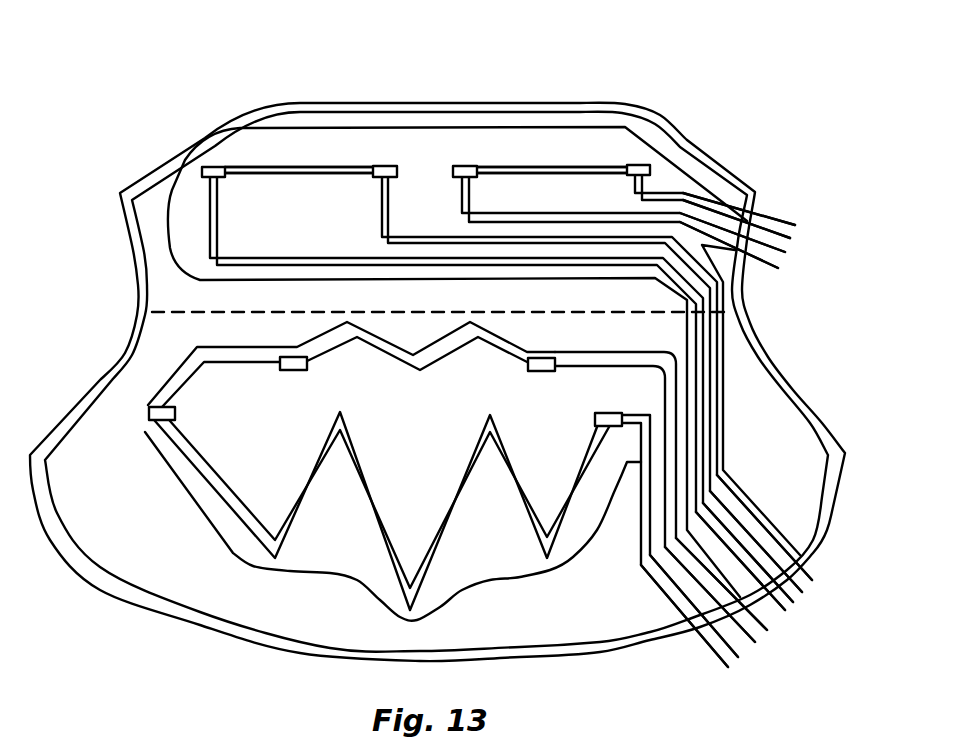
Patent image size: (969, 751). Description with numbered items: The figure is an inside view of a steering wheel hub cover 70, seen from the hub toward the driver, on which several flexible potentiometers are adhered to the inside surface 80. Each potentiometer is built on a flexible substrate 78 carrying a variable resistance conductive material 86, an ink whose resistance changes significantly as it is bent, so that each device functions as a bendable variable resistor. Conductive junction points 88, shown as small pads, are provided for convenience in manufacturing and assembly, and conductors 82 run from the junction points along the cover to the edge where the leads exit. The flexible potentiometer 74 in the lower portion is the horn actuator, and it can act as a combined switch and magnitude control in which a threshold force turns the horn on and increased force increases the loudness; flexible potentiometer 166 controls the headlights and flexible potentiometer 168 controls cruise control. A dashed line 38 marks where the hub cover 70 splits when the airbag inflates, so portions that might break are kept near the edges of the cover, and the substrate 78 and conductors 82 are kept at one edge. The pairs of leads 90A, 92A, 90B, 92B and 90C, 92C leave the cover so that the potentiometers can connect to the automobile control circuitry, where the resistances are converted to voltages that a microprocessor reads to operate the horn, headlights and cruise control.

The hub cover 70 is at (730, 172).
The flexible potentiometer 74 is at (205, 535).
The flexible substrate 78 is at (457, 146).
The inside surface 80 is at (157, 262).
The line 38 is at (198, 314).
The conductors 82 is at (672, 193).
The variable resistance conductive material 86 is at (270, 166).
The conductive junction points 88 is at (213, 167).
The flexible potentiometer 166 is at (300, 156).
The flexible potentiometer 168 is at (559, 156).
The lead 90A is at (818, 586).
The lead 92A is at (803, 607).
The lead 90B is at (773, 644).
The lead 92B is at (740, 668).
The lead 90C is at (800, 241).
The lead 92C is at (798, 268).